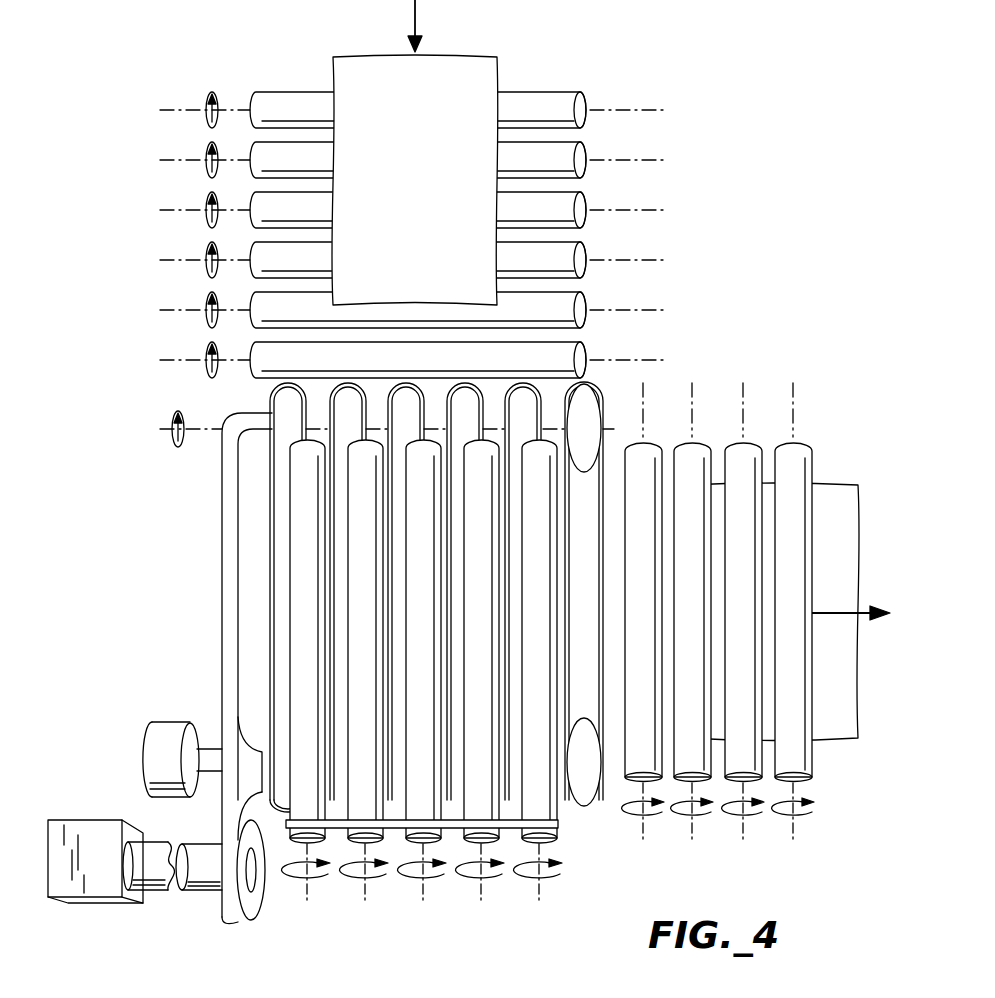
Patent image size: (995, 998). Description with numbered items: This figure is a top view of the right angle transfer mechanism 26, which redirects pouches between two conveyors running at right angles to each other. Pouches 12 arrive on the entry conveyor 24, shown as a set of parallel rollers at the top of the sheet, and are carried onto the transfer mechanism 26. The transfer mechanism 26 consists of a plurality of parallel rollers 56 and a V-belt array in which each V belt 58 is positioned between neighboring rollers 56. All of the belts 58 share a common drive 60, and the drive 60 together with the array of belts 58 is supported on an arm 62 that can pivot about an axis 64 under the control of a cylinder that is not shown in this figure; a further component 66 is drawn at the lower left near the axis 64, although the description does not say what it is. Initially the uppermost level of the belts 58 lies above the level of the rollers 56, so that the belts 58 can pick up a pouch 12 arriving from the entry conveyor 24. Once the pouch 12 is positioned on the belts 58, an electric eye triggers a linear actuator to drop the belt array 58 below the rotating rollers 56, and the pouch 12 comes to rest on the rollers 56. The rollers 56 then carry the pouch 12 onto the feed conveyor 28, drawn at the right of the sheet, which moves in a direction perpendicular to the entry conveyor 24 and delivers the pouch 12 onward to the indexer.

The pouch 12 is at (370, 62).
The entry conveyor 24 is at (652, 212).
The right angle transfer mechanism 26 is at (752, 318).
The feed conveyor 28 is at (814, 423).
The rollers 56 is at (423, 648).
The V belt 58 is at (388, 530).
The common drive 60 is at (173, 738).
The arm 62 is at (228, 604).
The axis 64 is at (205, 880).
The motor 66 is at (114, 822).